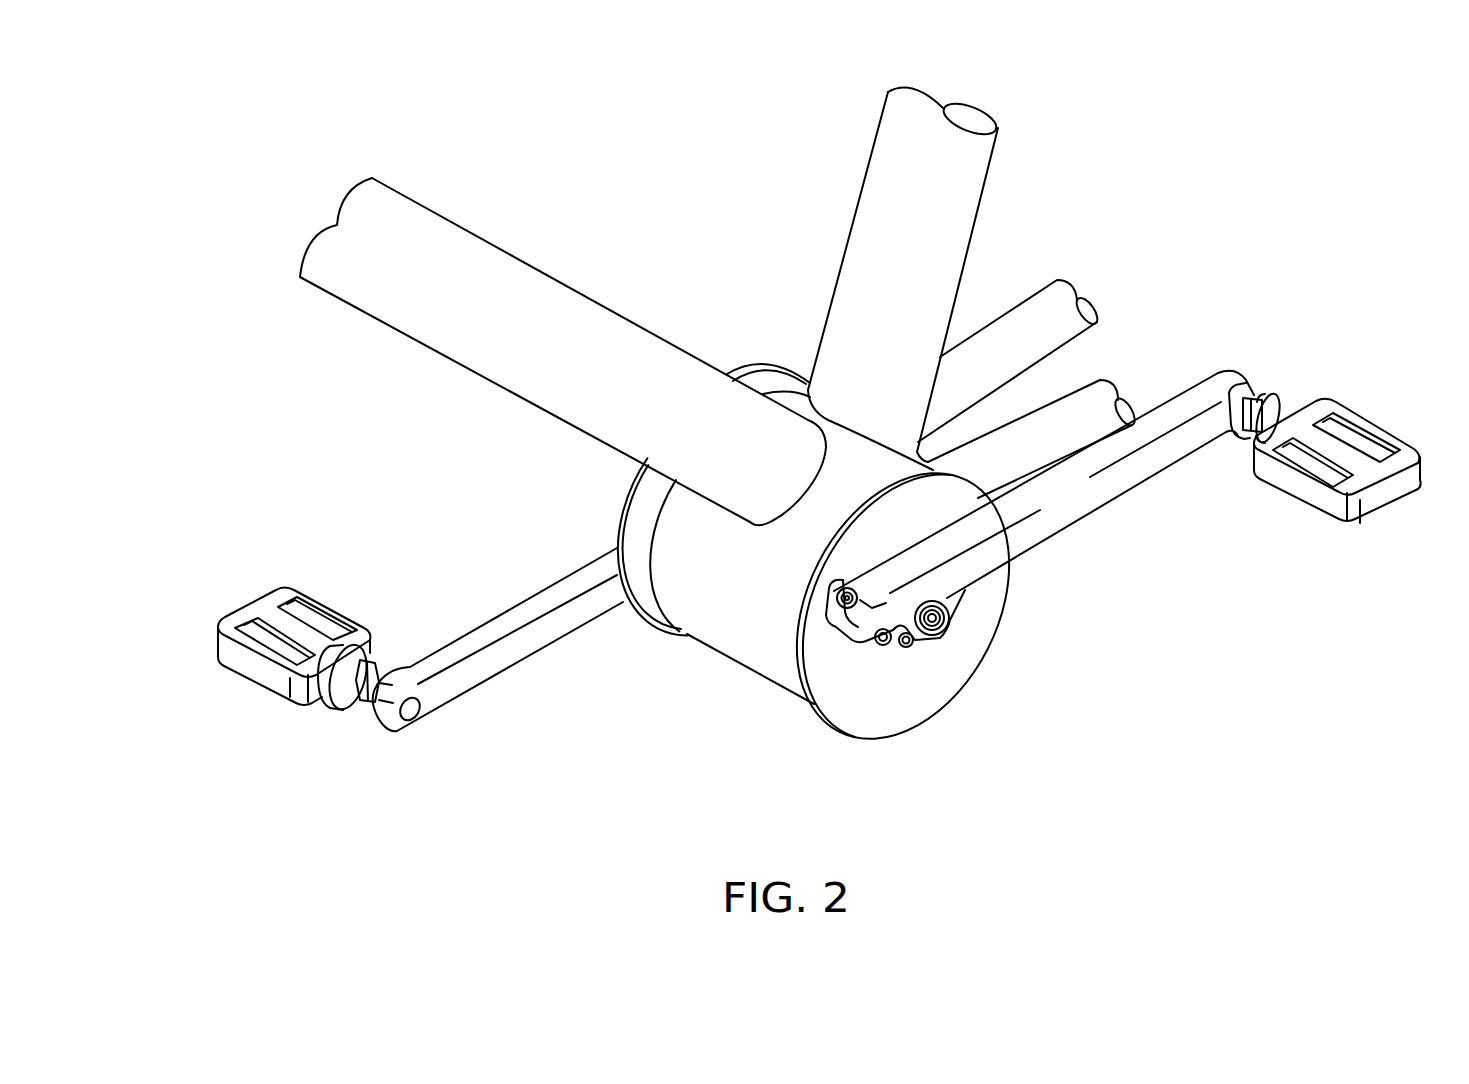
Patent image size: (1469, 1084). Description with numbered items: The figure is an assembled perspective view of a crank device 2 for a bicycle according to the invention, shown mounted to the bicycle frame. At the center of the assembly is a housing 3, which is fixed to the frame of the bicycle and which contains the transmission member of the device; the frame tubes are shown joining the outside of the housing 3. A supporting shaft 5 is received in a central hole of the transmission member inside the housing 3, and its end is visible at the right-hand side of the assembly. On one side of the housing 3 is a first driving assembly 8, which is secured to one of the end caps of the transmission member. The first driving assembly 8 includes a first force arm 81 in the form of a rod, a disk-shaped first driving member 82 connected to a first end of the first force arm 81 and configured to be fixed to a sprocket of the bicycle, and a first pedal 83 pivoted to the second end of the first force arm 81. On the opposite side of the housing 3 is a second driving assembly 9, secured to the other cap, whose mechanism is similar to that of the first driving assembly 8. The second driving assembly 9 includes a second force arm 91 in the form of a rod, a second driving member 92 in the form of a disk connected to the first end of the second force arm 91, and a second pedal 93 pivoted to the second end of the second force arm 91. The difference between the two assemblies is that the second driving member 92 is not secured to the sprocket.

The crank device 2 is at (730, 424).
The housing 3 is at (750, 723).
The supporting shaft 5 is at (986, 709).
The first driving assembly 8 is at (1044, 487).
The first force arm 81 is at (1092, 547).
The first driving member 82 is at (902, 656).
The first pedal 83 is at (1332, 514).
The second driving assembly 9 is at (498, 628).
The second force arm 91 is at (517, 562).
The second driving member 92 is at (635, 614).
The second pedal 93 is at (269, 687).